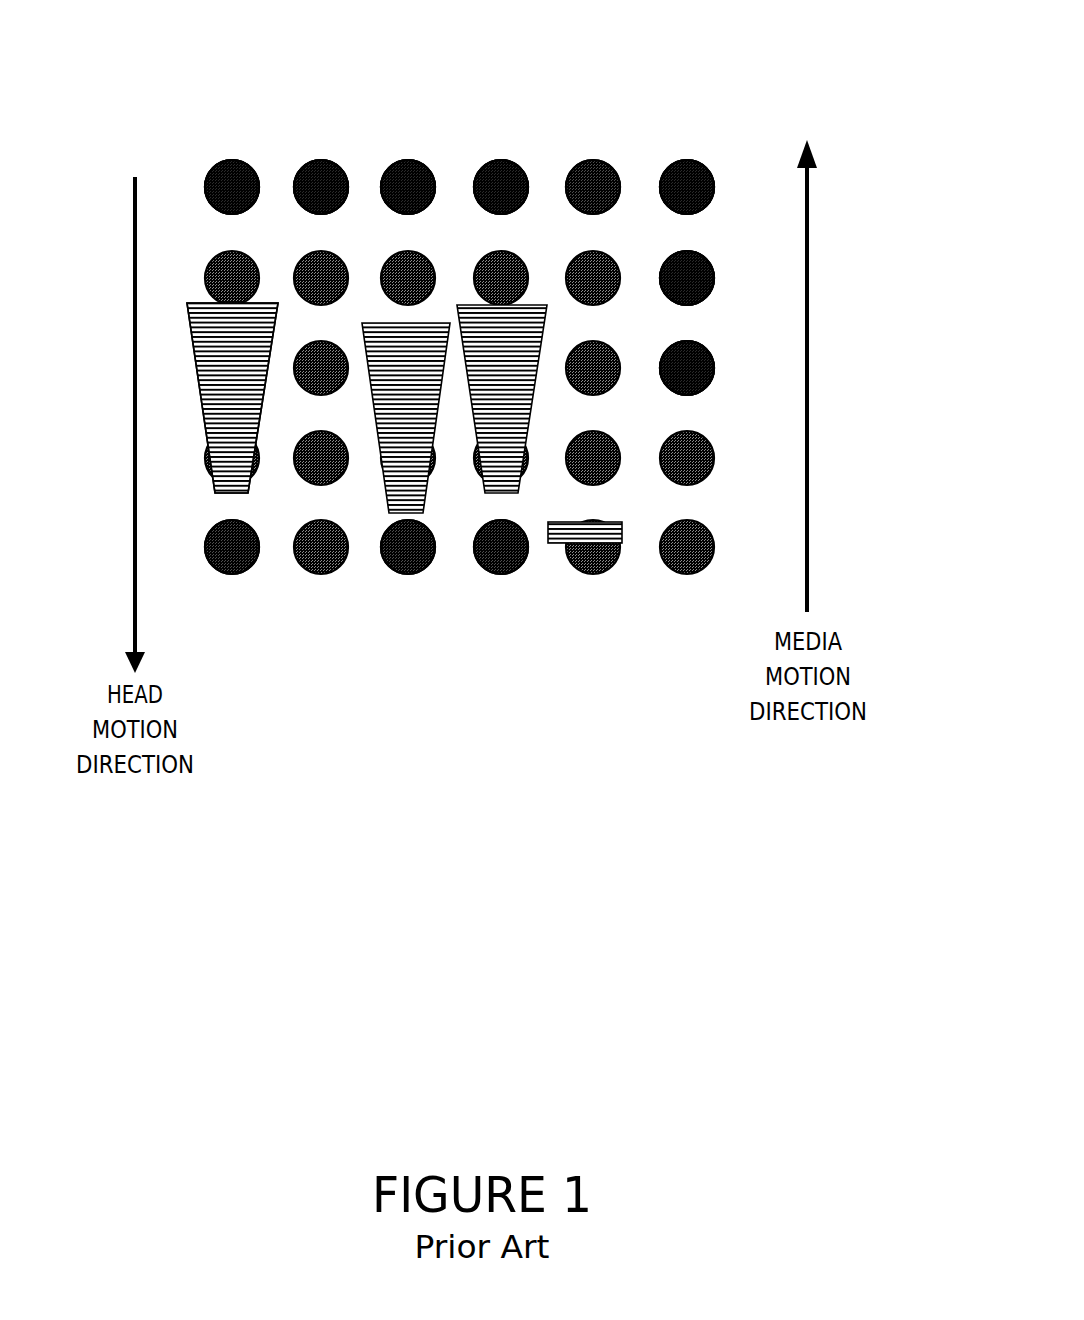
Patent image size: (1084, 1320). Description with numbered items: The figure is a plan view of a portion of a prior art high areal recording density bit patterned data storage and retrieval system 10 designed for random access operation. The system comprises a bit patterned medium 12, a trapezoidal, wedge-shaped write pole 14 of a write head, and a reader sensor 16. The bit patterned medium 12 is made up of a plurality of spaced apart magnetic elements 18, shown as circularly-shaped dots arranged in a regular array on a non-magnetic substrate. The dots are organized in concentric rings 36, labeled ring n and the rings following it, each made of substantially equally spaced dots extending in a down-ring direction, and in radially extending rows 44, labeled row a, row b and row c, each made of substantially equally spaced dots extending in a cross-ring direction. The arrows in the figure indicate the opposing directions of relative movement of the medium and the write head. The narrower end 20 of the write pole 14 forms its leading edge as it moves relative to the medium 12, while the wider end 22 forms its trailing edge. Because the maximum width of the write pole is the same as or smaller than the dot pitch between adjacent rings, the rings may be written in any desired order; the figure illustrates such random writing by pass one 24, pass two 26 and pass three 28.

The bit patterned data/information storage and retrieval system 10 is at (731, 92).
The bit patterned medium 12 is at (321, 616).
The write pole 14 is at (374, 302).
The reader sensor 16 is at (597, 564).
The magnetic elements 18 is at (606, 161).
The narrower end of write pole 20 is at (216, 488).
The wider end of write pole 22 is at (202, 303).
The pass 1 24 is at (230, 515).
The pass 2 26 is at (500, 515).
The pass 3 28 is at (398, 575).
The concentric rings 36 is at (233, 100).
The radially extending rows 44 is at (905, 177).
The concentric ring n is at (229, 145).
The radially extending row a is at (730, 178).
The radially extending row b is at (731, 271).
The radially extending row c is at (726, 353).